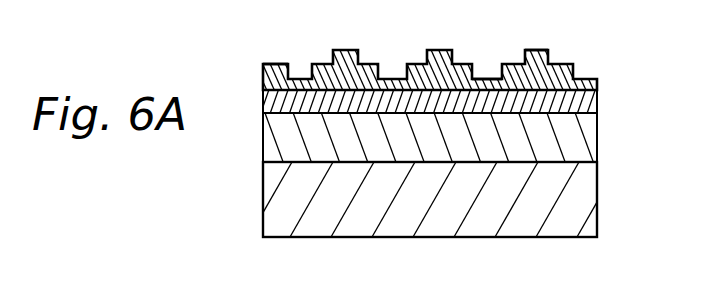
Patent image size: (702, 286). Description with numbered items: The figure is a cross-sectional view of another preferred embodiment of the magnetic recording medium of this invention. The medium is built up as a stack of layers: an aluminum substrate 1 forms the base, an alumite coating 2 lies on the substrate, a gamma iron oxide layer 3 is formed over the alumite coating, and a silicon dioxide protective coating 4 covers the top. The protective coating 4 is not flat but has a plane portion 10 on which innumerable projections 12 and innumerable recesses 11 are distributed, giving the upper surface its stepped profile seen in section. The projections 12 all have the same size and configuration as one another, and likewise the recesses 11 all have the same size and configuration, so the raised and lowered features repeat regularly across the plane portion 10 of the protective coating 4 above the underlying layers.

The aluminum substrate 1 is at (585, 196).
The alumite coating 2 is at (587, 140).
The γ-Fe2O3 layer 3 is at (588, 103).
The silicon dioxide protective coating 4 is at (563, 72).
The plane portion 10 is at (274, 64).
The recesses 11 is at (489, 78).
The projections 12 is at (540, 50).